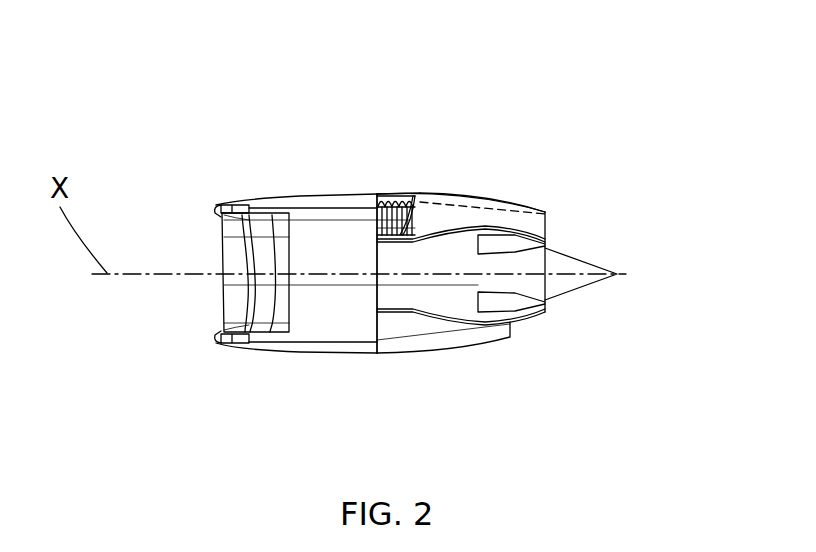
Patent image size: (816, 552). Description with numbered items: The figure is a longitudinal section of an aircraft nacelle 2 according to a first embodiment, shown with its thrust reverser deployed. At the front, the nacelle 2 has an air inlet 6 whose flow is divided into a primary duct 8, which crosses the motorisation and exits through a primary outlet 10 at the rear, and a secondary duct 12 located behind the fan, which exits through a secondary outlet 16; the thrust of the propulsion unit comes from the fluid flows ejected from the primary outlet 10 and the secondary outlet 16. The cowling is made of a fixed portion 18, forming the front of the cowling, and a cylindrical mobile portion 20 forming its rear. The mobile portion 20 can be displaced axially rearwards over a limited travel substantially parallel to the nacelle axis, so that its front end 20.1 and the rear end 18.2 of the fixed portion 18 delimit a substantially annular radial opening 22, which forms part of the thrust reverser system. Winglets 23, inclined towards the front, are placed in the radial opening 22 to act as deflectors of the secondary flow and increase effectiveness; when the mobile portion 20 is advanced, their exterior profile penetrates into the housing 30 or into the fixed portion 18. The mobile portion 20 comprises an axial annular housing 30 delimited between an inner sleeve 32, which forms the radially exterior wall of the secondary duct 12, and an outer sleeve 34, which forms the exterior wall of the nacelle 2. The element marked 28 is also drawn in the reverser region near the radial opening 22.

The nacelle 2 is at (298, 390).
The air inlet 6 is at (222, 325).
The primary duct 8 is at (388, 302).
The primary outlet 10 is at (543, 305).
The secondary duct 12 is at (537, 230).
The secondary outlet 16 is at (513, 323).
The fixed portion 18 is at (290, 186).
The rear end 18.2 is at (370, 194).
The mobile portion 20 is at (530, 184).
The front end 20.1 is at (417, 195).
The radial opening 22 is at (394, 168).
The winglets 23 is at (376, 194).
The blocker door 28 is at (411, 195).
The axial annular housing 30 is at (438, 201).
The inner sleeve 32 is at (440, 208).
The outer sleeve 34 is at (478, 205).